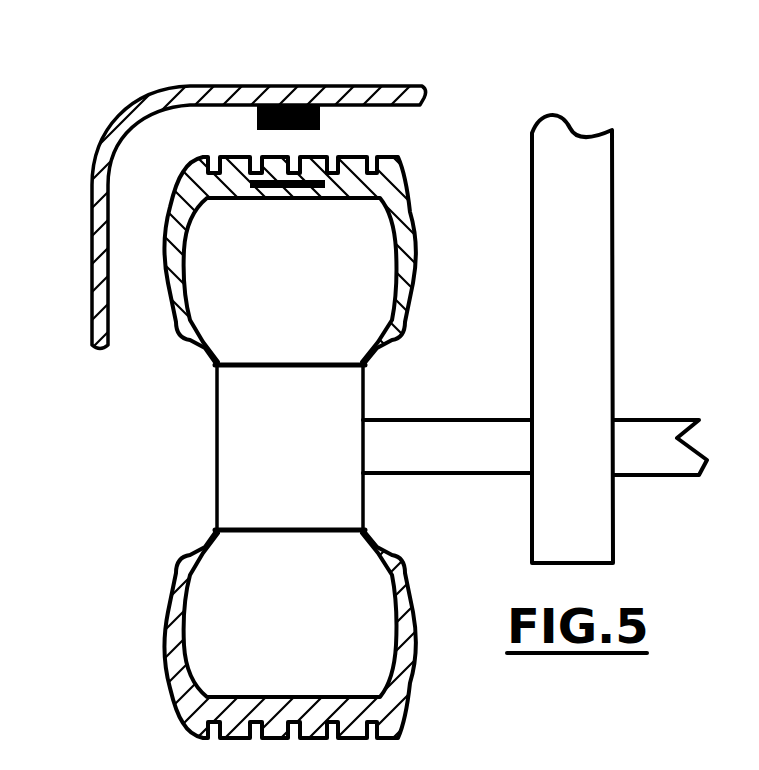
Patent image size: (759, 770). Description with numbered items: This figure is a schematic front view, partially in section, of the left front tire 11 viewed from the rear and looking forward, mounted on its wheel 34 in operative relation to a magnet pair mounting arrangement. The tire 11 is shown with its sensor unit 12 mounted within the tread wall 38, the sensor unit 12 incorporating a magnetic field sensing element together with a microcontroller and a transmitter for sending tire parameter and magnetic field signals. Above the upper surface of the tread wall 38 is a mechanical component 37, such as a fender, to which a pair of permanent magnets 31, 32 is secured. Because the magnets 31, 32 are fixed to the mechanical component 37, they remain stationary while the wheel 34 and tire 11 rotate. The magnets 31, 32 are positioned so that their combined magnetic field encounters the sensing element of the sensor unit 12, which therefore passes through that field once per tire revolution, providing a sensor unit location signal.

The left front tire 11 is at (327, 402).
The sensor unit 12 is at (292, 190).
The permanent magnet 31 is at (265, 88).
The permanent magnet 32 is at (288, 117).
The wheel 34 is at (583, 243).
The mechanical component 37 is at (100, 148).
The tread wall 38 is at (375, 165).